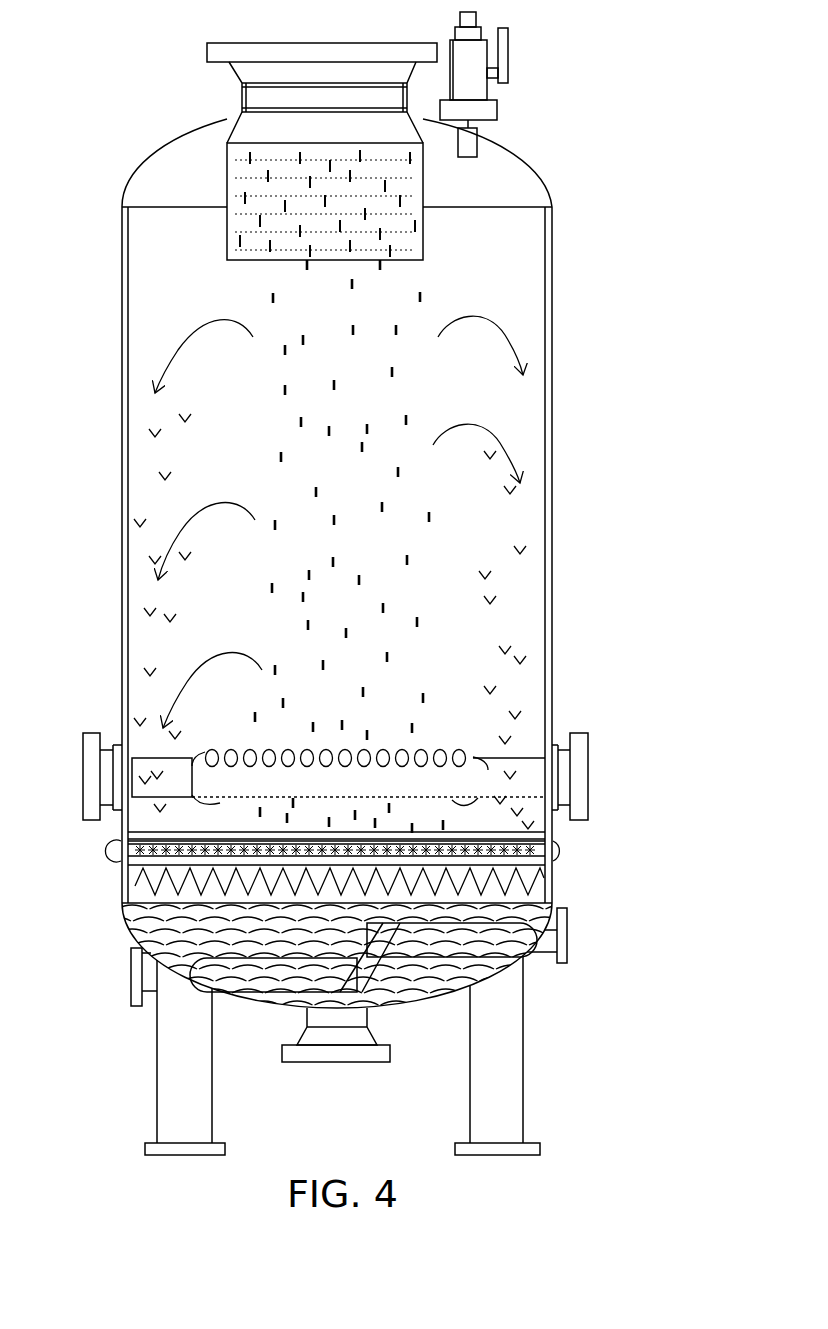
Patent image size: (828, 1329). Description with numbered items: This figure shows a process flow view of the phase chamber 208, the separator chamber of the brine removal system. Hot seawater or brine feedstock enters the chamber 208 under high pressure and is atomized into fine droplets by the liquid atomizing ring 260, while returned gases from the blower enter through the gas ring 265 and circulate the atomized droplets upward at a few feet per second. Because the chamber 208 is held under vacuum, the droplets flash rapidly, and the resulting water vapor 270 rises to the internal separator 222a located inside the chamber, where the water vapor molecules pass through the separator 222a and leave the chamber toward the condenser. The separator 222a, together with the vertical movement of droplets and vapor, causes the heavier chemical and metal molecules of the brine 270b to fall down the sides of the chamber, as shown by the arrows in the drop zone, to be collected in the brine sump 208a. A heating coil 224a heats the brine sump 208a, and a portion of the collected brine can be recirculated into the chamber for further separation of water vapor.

The phase chamber 208 is at (347, 482).
The internal separator 222a is at (325, 203).
The water vapor 270 is at (430, 296).
The brine 270b is at (527, 703).
The gas ring 265 is at (337, 777).
The liquid atomizing ring 260 is at (582, 855).
The brine sump 208a is at (190, 930).
The heating coil 224a is at (582, 932).